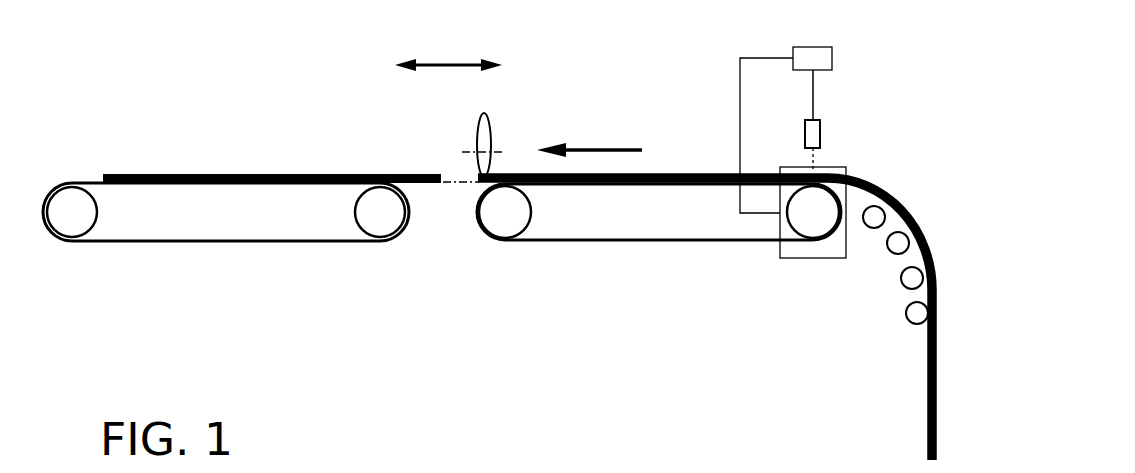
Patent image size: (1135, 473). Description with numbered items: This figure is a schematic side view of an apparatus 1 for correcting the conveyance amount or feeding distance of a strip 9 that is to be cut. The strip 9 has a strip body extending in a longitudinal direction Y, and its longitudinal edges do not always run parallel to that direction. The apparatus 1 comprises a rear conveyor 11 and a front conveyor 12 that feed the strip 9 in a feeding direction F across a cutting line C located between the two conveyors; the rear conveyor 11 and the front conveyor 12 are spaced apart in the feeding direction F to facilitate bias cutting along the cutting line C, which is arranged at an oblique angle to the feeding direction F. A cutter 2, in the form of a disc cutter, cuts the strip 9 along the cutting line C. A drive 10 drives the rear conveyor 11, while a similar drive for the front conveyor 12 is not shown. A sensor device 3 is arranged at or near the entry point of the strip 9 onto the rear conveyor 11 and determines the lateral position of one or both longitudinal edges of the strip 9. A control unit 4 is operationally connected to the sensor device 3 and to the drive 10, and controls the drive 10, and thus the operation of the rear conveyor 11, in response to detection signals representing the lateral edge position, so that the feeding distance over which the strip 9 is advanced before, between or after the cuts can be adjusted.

The apparatus 1 is at (243, 78).
The cutter 2 is at (482, 130).
The sensor device 3 is at (818, 138).
The control unit 4 is at (820, 52).
The strip 9 is at (691, 175).
The drive 10 is at (825, 257).
The rear conveyor 11 is at (618, 243).
The front conveyor 12 is at (220, 243).
The cutting line C is at (462, 184).
The feeding direction F is at (589, 131).
The longitudinal direction Y is at (448, 46).